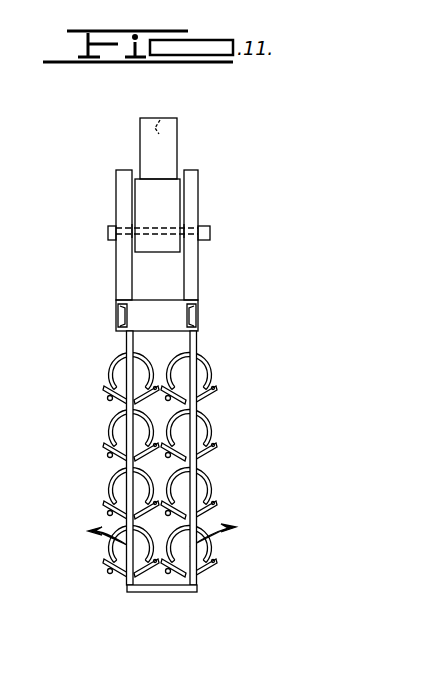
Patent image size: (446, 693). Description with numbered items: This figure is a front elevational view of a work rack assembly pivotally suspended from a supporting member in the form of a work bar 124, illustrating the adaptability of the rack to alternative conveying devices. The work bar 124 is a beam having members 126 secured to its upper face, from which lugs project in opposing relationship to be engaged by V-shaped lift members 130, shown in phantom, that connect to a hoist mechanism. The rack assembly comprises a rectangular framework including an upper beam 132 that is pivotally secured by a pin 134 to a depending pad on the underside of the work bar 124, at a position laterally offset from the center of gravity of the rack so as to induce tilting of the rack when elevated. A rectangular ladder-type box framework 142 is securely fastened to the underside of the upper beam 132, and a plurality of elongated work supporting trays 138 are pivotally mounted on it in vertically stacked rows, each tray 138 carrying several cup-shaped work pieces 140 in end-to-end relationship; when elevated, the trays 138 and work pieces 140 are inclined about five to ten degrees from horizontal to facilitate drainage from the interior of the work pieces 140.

The work bar 124 is at (165, 197).
The members 126 is at (167, 145).
The lift members 130 is at (170, 113).
The upper beam 132 is at (197, 315).
The pin 134 is at (212, 233).
The work supporting trays 138 is at (107, 445).
The cup-shaped work pieces 140 is at (206, 362).
The ladder-type box framework 142 is at (200, 462).